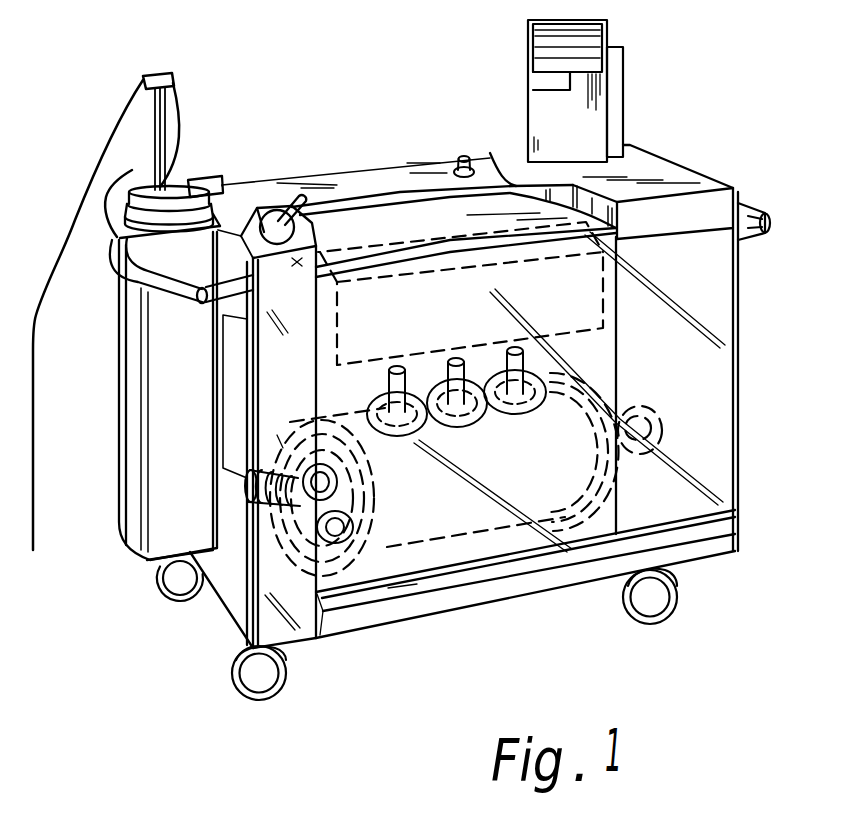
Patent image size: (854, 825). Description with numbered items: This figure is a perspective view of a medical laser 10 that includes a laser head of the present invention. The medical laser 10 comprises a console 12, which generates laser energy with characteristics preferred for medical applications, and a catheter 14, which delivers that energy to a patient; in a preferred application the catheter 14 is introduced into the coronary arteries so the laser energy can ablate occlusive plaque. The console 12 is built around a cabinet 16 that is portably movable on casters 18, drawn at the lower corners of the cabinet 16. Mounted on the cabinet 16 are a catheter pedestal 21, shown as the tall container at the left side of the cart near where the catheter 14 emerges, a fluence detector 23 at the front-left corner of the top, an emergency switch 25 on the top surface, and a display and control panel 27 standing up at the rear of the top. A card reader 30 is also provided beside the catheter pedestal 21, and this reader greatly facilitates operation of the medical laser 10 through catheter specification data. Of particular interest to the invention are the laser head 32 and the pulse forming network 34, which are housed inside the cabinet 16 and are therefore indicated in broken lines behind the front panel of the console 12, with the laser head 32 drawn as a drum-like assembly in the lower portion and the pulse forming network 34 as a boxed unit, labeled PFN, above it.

The medical laser 10 is at (645, 88).
The console 12 is at (698, 157).
The catheter 14 is at (33, 405).
The cabinet 16 is at (715, 333).
The casters 18 is at (188, 578).
The catheter pedestal 21 is at (117, 237).
The fluence detector 23 is at (266, 206).
The emergency switch 25 is at (461, 158).
The display and control panel 27 is at (528, 113).
The card reader 30 is at (208, 177).
The laser head 32 is at (628, 488).
The pulse forming network 34 is at (585, 300).